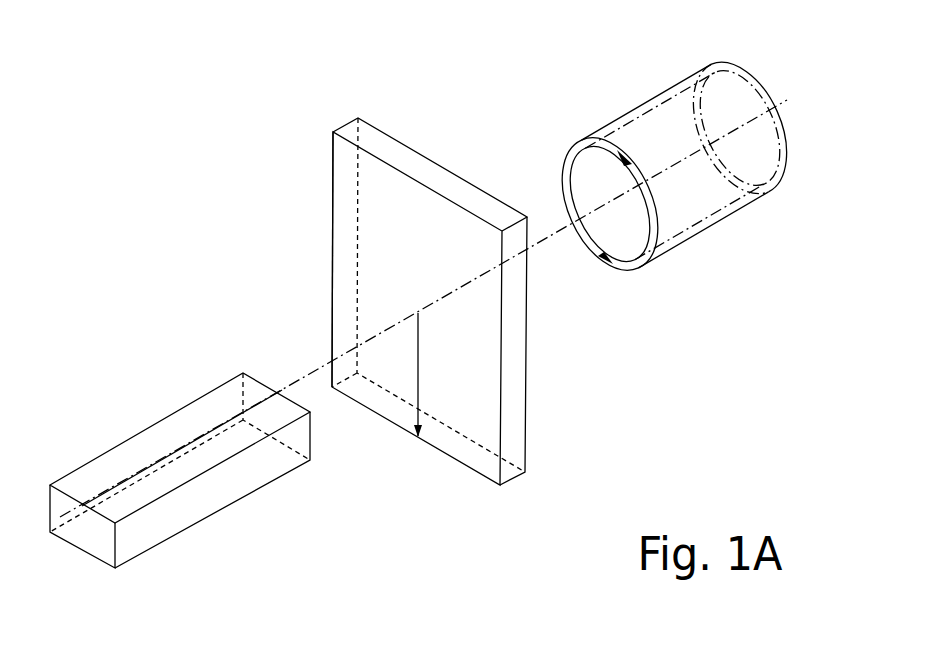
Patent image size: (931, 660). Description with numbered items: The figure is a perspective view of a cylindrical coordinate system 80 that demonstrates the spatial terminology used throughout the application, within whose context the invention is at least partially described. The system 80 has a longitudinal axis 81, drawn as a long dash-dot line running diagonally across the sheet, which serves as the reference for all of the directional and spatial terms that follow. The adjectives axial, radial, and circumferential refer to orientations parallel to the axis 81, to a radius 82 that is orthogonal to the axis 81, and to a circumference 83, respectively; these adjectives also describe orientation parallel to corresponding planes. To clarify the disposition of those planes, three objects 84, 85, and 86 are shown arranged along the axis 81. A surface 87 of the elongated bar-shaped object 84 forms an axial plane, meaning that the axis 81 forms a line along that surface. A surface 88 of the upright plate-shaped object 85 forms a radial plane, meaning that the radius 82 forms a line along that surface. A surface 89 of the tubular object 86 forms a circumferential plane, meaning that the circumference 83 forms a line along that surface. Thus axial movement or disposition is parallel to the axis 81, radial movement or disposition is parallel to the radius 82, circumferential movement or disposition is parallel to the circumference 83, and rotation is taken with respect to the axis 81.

The cylindrical coordinate system 80 is at (292, 178).
The longitudinal axis 81 is at (777, 103).
The radius 82 is at (418, 367).
The circumference 83 is at (557, 167).
The object 84 is at (140, 553).
The object 85 is at (533, 477).
The object 86 is at (700, 243).
The surface 87 is at (137, 450).
The surface 88 is at (348, 258).
The surface 89 is at (640, 102).